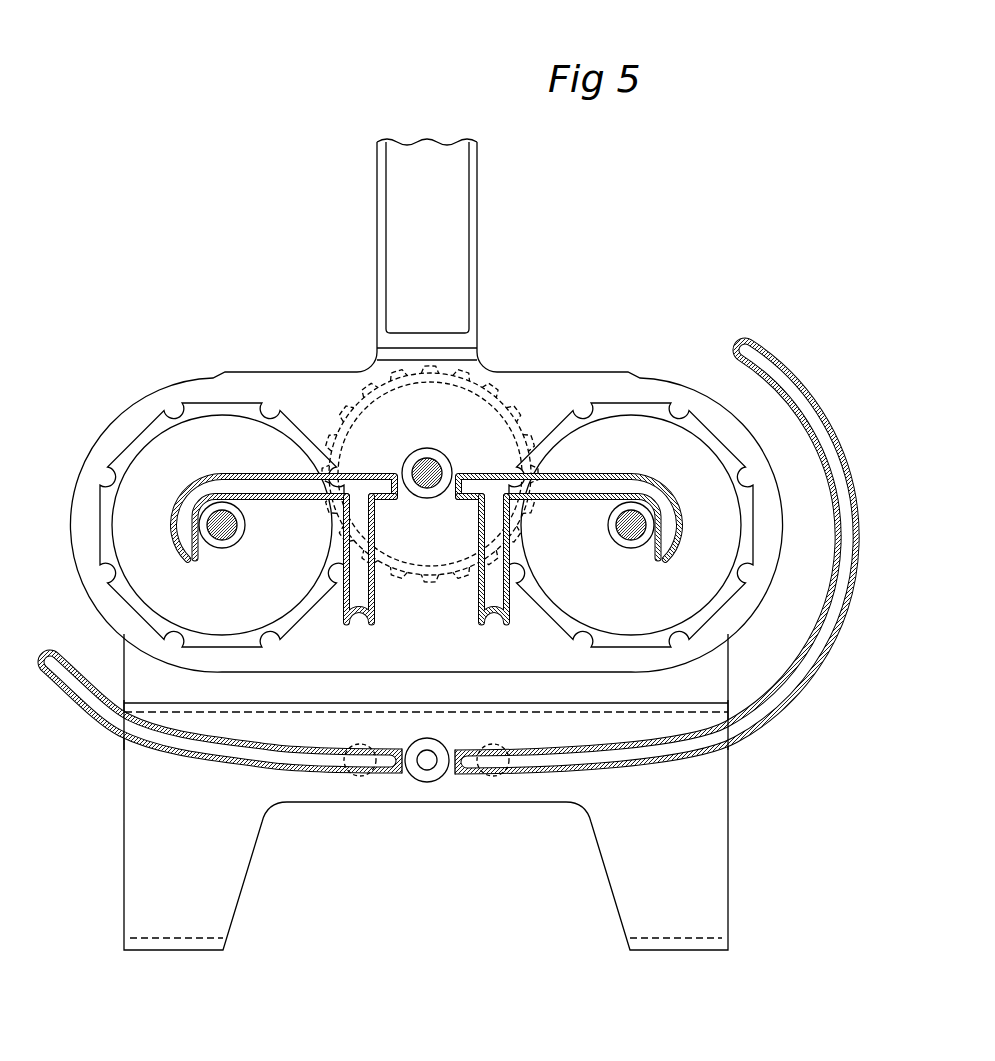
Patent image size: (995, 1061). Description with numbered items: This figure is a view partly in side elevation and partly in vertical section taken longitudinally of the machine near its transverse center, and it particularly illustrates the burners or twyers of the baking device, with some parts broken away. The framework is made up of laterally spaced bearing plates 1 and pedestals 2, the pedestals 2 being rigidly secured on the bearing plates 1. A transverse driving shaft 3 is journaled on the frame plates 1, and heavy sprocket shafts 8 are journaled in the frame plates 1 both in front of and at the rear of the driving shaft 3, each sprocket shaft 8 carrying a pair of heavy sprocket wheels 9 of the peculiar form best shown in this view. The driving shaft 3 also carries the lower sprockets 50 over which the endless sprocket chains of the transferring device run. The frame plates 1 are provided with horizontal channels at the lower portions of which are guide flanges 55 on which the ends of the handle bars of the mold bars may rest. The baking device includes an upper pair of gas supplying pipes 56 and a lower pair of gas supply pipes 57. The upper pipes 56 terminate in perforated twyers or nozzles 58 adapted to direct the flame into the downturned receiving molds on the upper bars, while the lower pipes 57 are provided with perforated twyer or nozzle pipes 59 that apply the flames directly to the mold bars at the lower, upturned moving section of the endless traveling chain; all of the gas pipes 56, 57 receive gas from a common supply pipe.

The bearing plates 1 is at (594, 385).
The pedestals 2 is at (455, 283).
The driving shaft 3 is at (427, 462).
The sprocket shafts 8 is at (232, 535).
The sprocket wheels 9 is at (143, 578).
The lower sprockets 50 is at (483, 421).
The guide flanges 55 is at (279, 697).
The upper pair of gas supplying pipes 56 is at (490, 624).
The lower pair of gas supply pipes 57 is at (360, 762).
The perforated twyer or nozzles 58 is at (213, 473).
The perforated twyer or nozzle pipes 59 is at (795, 675).